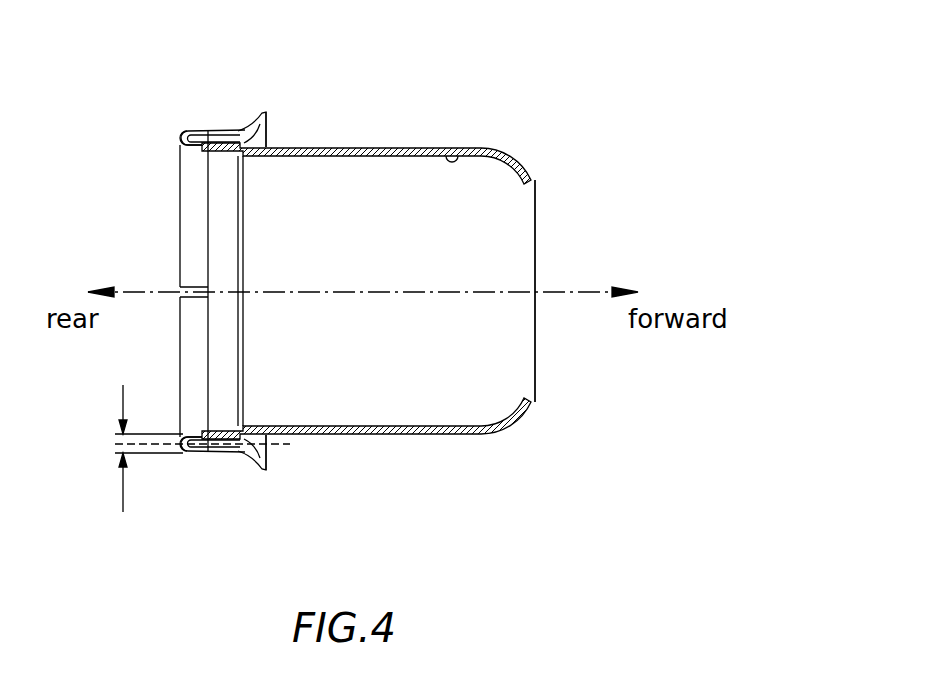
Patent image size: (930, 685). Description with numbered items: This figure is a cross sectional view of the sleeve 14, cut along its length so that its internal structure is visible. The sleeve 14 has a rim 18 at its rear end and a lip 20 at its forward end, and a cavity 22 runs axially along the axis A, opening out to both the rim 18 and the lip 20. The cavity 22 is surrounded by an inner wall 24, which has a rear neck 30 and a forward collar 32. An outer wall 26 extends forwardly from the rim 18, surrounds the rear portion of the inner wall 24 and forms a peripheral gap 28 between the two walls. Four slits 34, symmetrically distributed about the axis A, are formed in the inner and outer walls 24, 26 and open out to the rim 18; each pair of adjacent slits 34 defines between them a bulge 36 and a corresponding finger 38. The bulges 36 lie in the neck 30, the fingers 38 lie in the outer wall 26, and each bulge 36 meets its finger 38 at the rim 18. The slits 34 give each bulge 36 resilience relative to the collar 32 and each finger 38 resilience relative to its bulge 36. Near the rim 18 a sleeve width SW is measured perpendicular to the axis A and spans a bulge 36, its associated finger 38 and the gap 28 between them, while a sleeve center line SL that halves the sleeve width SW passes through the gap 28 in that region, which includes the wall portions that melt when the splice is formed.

The sleeve 14 is at (551, 90).
The rim 18 is at (181, 131).
The lip 20 is at (537, 178).
The cavity 22 is at (490, 231).
The inner wall 24 is at (398, 149).
The outer wall 26 is at (212, 130).
The peripheral gap 28 is at (266, 136).
The rear neck 30 is at (197, 154).
The forward collar 32 is at (470, 150).
The slits 34 is at (179, 138).
The bulge 36 is at (203, 228).
The finger 38 is at (241, 124).
The axis A is at (152, 296).
The sleeve center line SL is at (142, 452).
The sleeve width SW is at (128, 465).